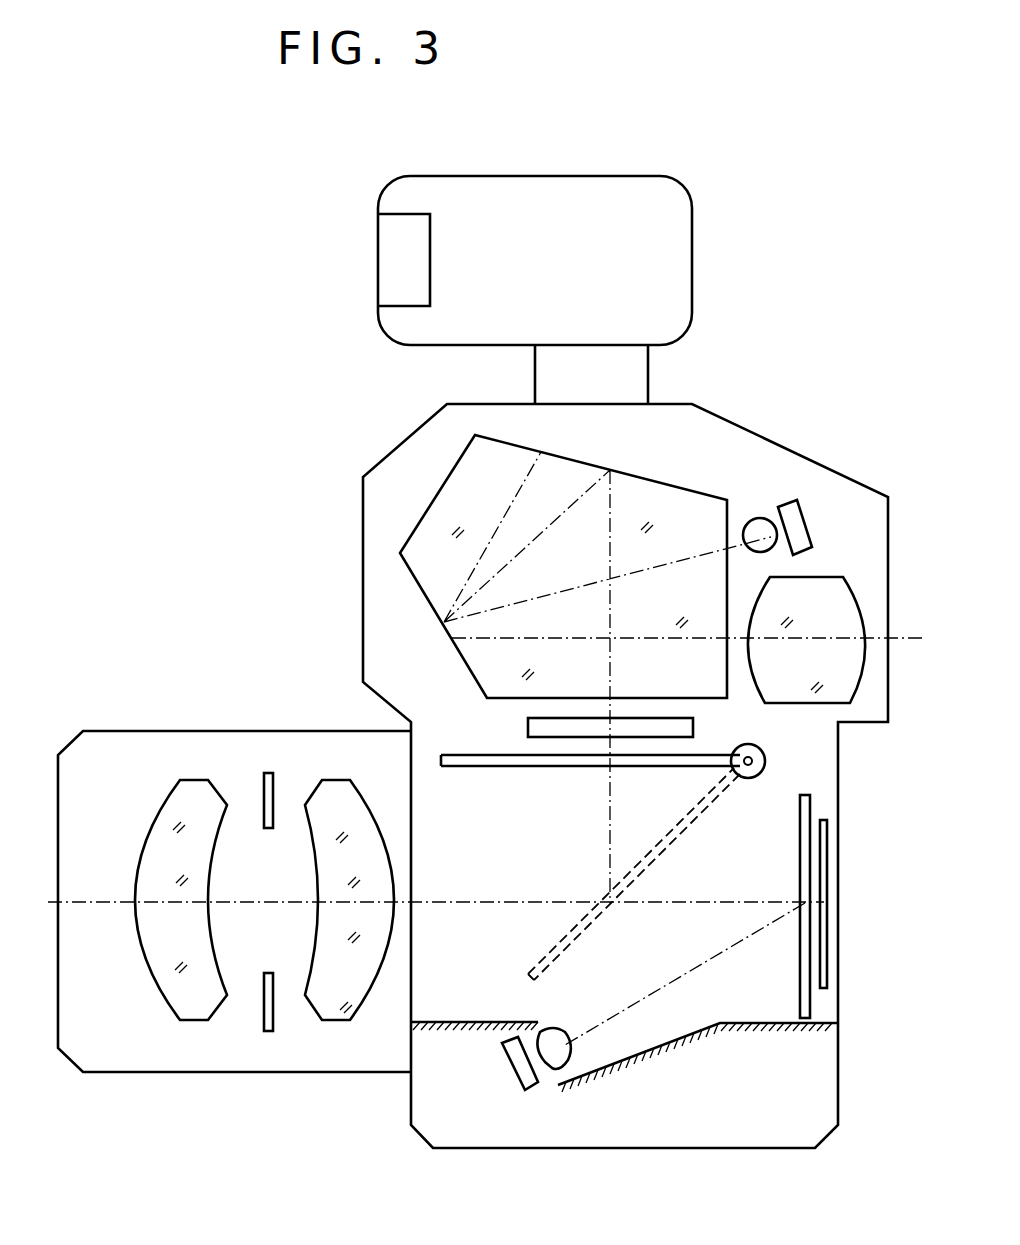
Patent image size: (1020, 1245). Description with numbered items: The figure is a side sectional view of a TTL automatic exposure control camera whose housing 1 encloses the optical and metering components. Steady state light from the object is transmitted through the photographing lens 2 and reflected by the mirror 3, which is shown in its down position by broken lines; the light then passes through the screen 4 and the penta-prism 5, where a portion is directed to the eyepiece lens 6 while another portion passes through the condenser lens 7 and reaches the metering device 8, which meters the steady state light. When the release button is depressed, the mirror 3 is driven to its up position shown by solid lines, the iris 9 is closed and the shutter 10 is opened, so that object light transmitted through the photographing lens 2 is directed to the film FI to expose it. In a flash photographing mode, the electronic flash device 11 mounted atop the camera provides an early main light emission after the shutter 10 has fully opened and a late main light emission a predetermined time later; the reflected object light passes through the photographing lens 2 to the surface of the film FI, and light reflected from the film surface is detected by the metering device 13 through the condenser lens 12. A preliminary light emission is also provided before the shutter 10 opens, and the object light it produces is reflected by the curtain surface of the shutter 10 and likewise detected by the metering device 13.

The camera body 1 is at (733, 1137).
The photographing lens 2 is at (137, 762).
The mirror 3 is at (683, 830).
The screen 4 is at (693, 728).
The penta-prism 5 is at (684, 498).
The eyepiece lens 6 is at (852, 624).
The condenser lens 7 is at (766, 520).
The metering device 8 is at (800, 523).
The iris 9 is at (269, 772).
The shutter 10 is at (810, 1005).
The electronic flash device 11 is at (646, 178).
The condenser lens 12 is at (570, 1082).
The metering device 13 is at (514, 1080).
The film FI is at (826, 840).